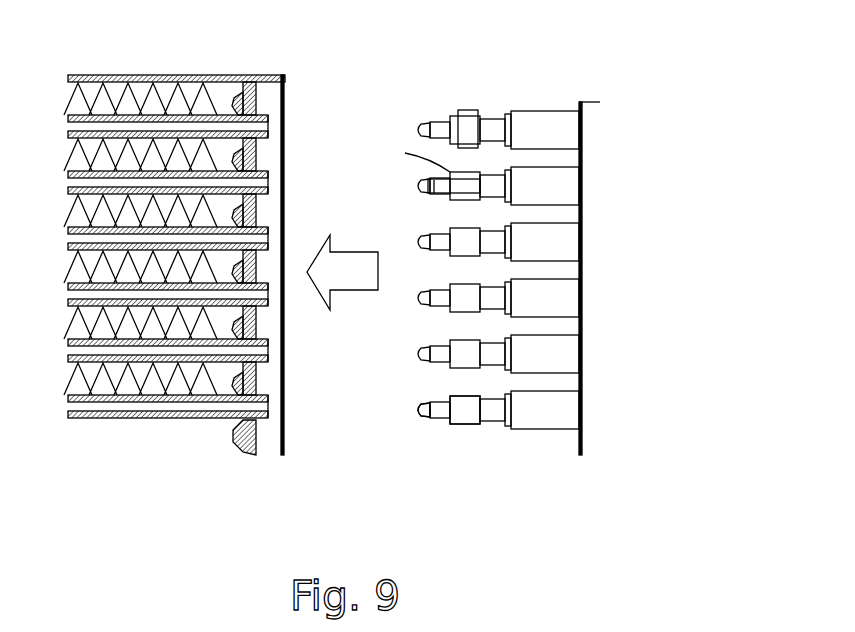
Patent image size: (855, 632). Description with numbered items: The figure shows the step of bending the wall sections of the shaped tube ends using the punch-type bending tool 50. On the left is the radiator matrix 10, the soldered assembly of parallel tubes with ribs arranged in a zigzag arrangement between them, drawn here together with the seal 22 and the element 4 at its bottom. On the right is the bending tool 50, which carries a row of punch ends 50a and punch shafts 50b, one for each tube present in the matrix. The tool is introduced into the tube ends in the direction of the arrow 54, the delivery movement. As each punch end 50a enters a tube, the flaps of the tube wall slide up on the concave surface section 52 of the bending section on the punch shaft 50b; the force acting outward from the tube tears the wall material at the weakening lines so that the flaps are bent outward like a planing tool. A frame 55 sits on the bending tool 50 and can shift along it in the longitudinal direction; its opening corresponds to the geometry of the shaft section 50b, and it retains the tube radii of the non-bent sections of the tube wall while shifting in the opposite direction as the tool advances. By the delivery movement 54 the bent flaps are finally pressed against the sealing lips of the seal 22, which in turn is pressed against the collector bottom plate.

The radiator matrix 10 is at (198, 247).
The base plate 4 is at (91, 420).
The seal 22 is at (255, 325).
The arrow 54 is at (362, 291).
The bending tool 50 is at (518, 263).
The punch end 50a is at (421, 416).
The punch shaft 50b is at (448, 411).
The concave surface section 52 is at (455, 148).
The frame 55 is at (470, 108).